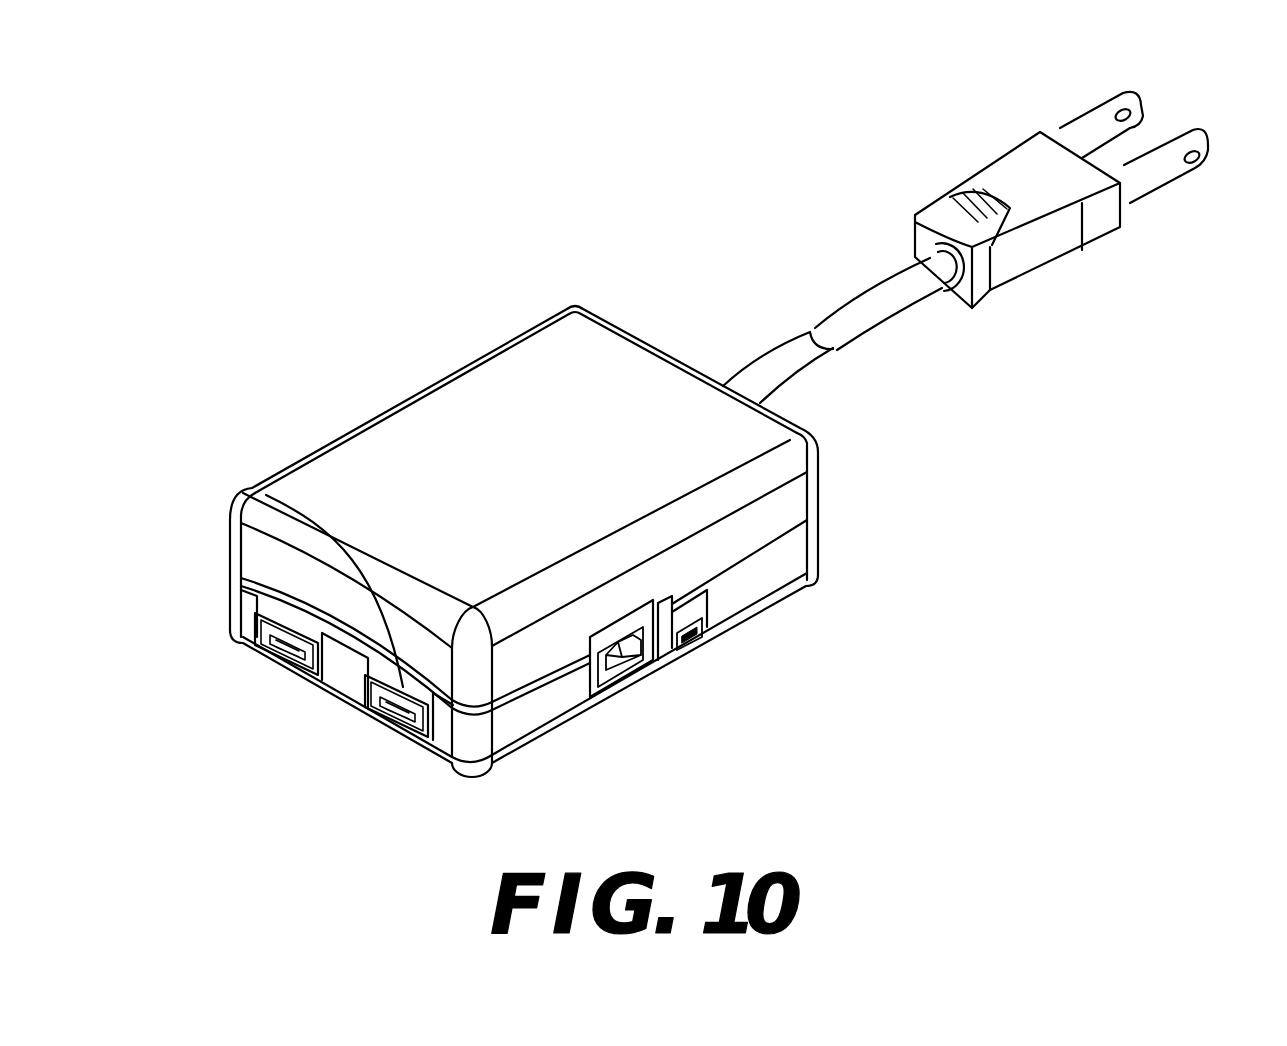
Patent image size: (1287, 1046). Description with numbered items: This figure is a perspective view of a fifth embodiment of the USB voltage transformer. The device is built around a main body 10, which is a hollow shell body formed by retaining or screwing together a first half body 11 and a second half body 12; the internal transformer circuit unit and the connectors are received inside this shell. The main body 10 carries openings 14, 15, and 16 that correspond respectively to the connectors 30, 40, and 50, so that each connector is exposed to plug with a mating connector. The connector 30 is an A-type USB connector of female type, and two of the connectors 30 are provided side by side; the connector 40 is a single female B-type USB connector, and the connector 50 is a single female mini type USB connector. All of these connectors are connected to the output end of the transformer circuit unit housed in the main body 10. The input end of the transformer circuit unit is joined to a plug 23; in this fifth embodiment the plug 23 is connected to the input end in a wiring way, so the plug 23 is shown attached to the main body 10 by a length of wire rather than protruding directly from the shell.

The main body 10 is at (385, 386).
The first half body 11 is at (543, 710).
The second half body 12 is at (782, 456).
The opening 14 is at (277, 507).
The opening 15 is at (593, 703).
The opening 16 is at (707, 610).
The plug 23 is at (1133, 113).
The A-type USB connector 30 is at (287, 653).
The B-type USB connector 40 is at (623, 657).
The mini type USB connector 50 is at (710, 632).